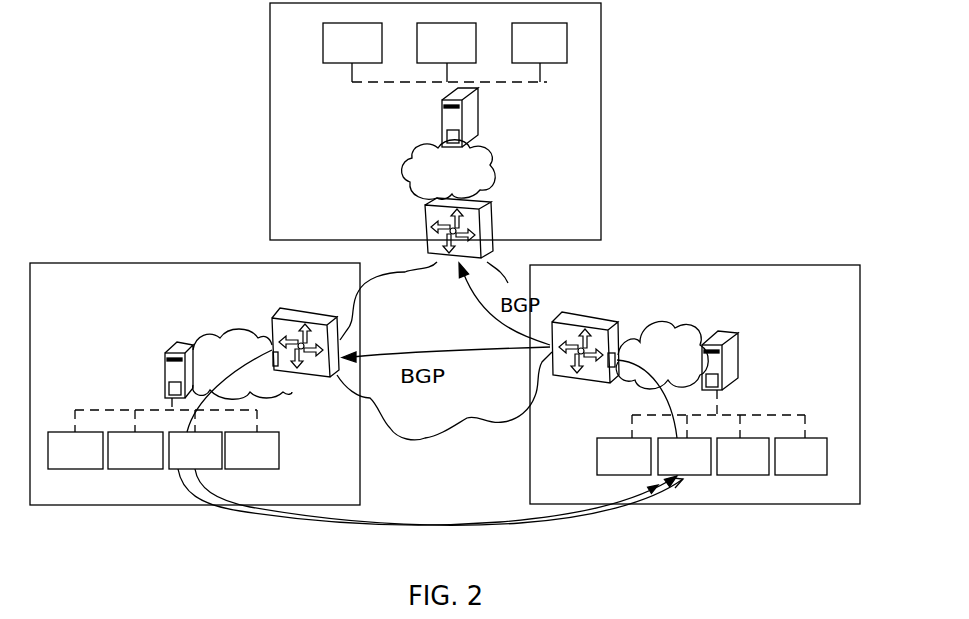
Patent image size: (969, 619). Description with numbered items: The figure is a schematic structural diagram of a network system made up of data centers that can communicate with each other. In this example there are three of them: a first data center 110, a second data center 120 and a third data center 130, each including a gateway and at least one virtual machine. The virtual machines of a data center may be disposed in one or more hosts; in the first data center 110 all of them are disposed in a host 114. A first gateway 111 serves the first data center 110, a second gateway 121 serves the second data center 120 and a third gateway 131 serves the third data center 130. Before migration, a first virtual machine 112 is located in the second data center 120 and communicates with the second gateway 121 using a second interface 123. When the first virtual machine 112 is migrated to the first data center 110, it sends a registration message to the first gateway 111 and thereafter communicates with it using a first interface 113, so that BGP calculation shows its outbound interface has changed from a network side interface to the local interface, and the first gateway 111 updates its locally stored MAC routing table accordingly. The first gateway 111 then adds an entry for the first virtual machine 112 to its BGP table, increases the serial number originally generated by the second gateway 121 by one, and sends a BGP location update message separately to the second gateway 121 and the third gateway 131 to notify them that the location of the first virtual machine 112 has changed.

The first data center 110 is at (668, 265).
The first gateway 111 is at (562, 318).
The first virtual machine 112 is at (687, 476).
The first interface 113 is at (610, 380).
The host 114 is at (728, 332).
The second data center 120 is at (110, 263).
The second gateway 121 is at (313, 312).
The second interface 123 is at (278, 372).
The third data center 130 is at (602, 107).
The third gateway 131 is at (495, 215).